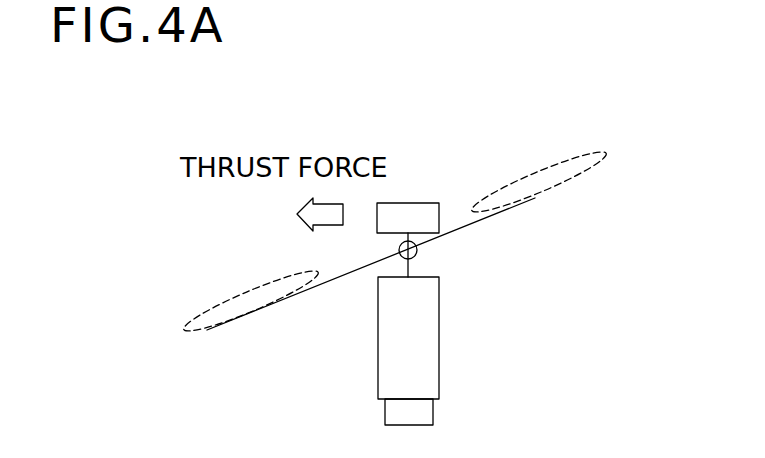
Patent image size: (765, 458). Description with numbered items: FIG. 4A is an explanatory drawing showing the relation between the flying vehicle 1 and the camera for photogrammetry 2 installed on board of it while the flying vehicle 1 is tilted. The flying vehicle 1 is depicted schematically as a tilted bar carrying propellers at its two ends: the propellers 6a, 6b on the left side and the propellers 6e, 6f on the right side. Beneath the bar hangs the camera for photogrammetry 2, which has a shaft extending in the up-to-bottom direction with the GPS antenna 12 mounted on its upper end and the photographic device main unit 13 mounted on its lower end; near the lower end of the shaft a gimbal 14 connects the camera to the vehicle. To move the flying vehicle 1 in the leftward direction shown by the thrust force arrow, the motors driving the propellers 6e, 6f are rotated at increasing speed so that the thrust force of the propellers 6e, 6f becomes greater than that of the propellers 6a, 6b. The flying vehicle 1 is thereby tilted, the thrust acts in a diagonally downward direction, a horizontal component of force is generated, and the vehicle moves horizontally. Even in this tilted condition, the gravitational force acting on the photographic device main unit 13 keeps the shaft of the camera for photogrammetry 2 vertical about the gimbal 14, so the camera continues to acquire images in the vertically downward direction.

The flying vehicle 1 is at (371, 198).
The camera for photogrammetry 2 is at (467, 338).
The GPS antenna 12 is at (408, 168).
The photographic device main unit 13 is at (459, 426).
The gimbal 14 is at (475, 273).
The propeller 6a is at (212, 268).
The propeller 6b is at (212, 268).
The propeller 6e is at (570, 193).
The propeller 6f is at (570, 193).